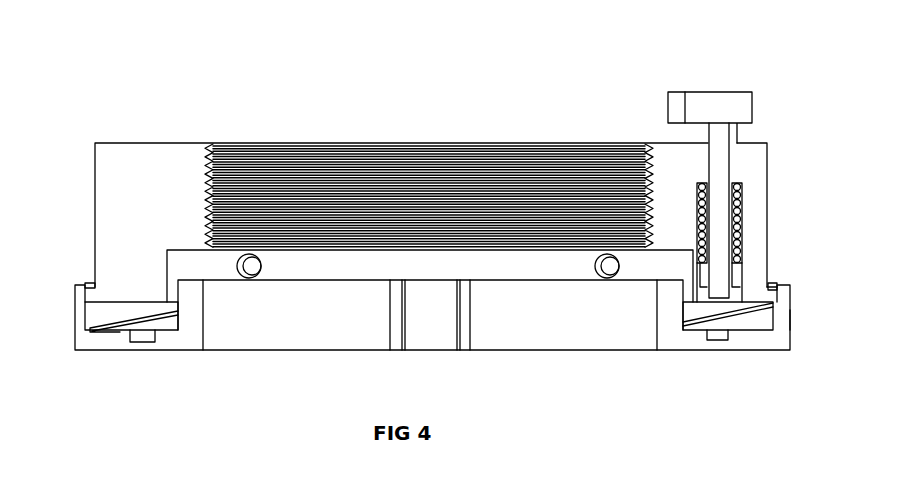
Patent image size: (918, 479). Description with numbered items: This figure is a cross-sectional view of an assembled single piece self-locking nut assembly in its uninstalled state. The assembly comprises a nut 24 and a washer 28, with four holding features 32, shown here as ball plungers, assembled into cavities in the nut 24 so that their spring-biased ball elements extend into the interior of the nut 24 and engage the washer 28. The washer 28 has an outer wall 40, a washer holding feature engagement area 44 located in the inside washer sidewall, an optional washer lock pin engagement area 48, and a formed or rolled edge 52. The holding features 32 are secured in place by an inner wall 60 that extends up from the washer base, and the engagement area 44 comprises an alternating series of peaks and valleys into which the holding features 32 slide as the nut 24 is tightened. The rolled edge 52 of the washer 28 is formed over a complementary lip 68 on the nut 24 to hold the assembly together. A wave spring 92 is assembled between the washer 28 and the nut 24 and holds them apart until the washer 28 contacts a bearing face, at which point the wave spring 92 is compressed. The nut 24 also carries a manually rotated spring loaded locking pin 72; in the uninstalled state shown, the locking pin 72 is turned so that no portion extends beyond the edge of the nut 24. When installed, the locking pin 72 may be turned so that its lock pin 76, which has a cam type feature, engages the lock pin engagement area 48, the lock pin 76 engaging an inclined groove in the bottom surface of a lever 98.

The nut 24 is at (116, 143).
The inner wall 60 is at (195, 280).
The outer wall 40 is at (80, 318).
The washer holding feature engagement area 44 is at (185, 302).
The rolled edge 52 is at (90, 283).
The wave spring 92 is at (108, 330).
The washer lock pin engagement area 48 is at (735, 335).
The holding features 32 is at (240, 278).
The lock pin 76 is at (727, 290).
The locking pin 72 is at (728, 90).
The lever 98 is at (668, 108).
The complementary lip 68 is at (771, 284).
The washer 28 is at (800, 316).